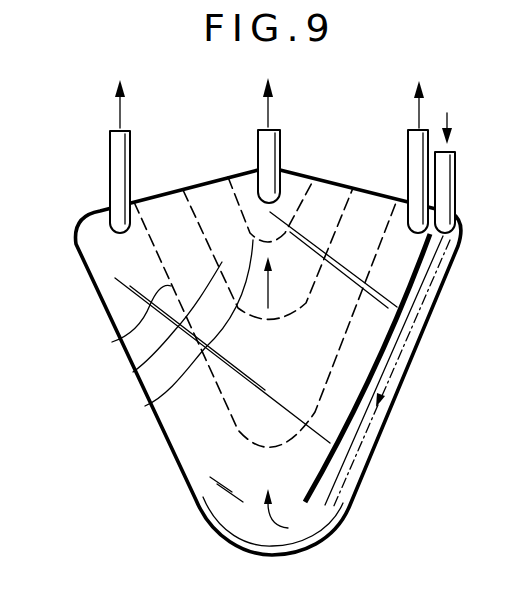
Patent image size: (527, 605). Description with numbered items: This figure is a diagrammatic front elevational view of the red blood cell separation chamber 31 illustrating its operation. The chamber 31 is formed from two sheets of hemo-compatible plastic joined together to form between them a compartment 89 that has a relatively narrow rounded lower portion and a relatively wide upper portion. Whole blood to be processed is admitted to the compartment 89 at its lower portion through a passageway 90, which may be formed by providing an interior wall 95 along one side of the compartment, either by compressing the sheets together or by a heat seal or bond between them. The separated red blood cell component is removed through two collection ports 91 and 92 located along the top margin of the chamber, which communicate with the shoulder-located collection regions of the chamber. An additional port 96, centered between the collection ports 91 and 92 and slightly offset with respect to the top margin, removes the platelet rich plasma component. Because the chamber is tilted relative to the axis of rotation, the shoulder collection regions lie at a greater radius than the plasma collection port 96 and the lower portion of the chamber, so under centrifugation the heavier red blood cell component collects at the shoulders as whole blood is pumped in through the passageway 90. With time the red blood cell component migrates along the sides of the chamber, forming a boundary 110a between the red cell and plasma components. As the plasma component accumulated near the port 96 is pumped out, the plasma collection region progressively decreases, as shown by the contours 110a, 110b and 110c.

The compartment 89 is at (314, 387).
The passageway 90 is at (318, 503).
The collection port 91 is at (121, 166).
The collection port 92 is at (419, 157).
The interior wall 95 is at (400, 345).
The PRP collection port 96 is at (268, 145).
The red blood cell separation chamber 31 is at (364, 472).
The boundary 110a is at (112, 342).
The contour 110b is at (133, 372).
The contour 110c is at (145, 406).